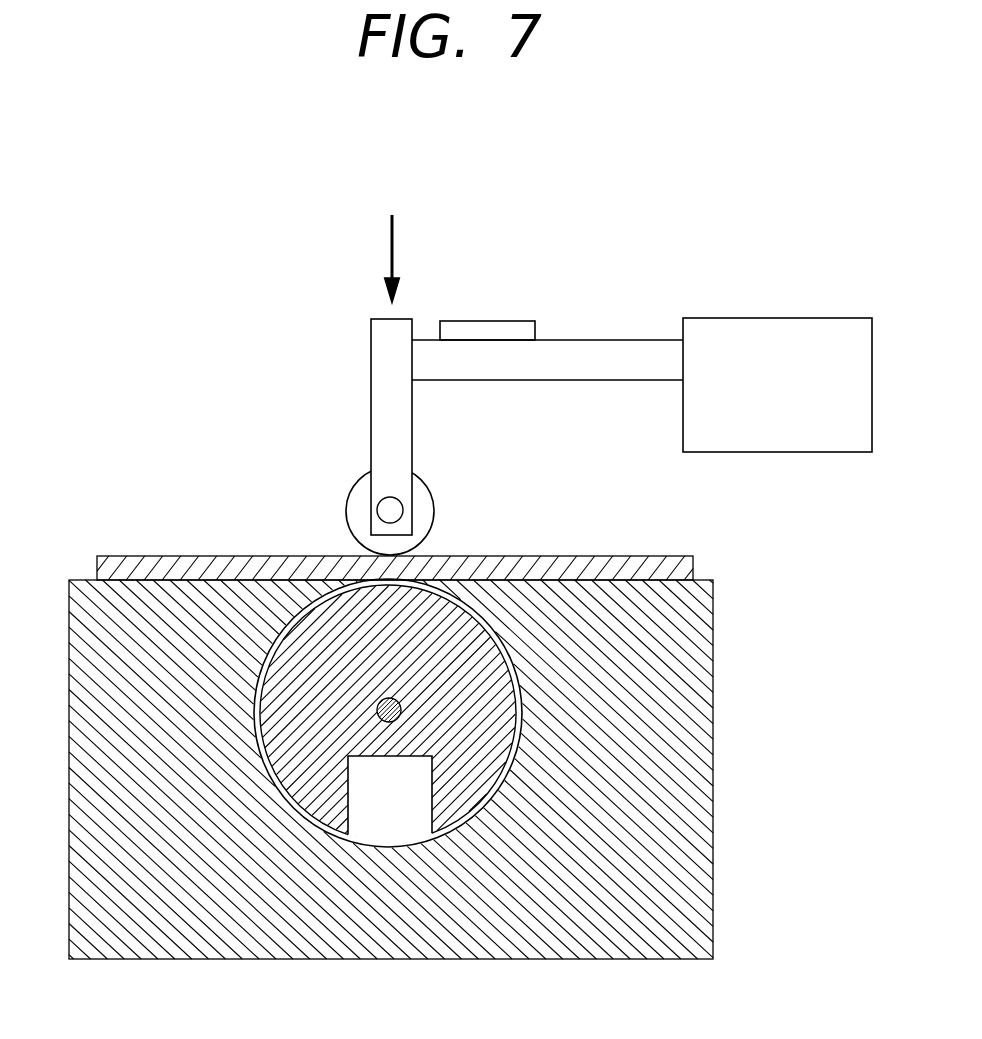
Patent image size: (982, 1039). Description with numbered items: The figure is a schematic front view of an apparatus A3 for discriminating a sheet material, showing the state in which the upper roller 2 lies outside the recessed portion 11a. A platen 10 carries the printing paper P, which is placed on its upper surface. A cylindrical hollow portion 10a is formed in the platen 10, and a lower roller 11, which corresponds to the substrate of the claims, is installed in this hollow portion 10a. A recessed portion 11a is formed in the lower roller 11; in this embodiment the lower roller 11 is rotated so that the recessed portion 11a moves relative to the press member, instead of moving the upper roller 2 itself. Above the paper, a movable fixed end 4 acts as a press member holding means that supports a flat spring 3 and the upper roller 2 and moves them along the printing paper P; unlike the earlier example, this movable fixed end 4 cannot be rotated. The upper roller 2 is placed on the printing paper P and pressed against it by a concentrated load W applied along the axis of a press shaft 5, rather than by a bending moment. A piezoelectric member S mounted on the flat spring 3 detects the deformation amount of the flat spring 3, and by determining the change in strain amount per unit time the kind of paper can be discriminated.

The apparatus A3 is at (755, 192).
The load W is at (392, 240).
The piezoelectric member S is at (500, 320).
The printing paper P is at (147, 555).
The upper roller 2 is at (423, 493).
The flat spring 3 is at (624, 345).
The movable fixed end 4 is at (838, 318).
The press shaft 5 is at (382, 343).
The platen 10 is at (693, 805).
The cylindrical hollow portion 10a is at (522, 712).
The lower roller 11 is at (470, 781).
The recessed portion 11a is at (387, 820).